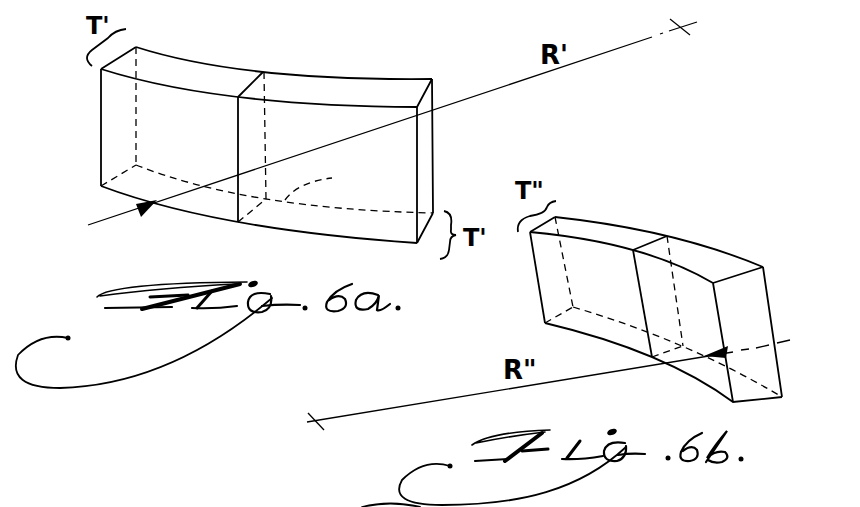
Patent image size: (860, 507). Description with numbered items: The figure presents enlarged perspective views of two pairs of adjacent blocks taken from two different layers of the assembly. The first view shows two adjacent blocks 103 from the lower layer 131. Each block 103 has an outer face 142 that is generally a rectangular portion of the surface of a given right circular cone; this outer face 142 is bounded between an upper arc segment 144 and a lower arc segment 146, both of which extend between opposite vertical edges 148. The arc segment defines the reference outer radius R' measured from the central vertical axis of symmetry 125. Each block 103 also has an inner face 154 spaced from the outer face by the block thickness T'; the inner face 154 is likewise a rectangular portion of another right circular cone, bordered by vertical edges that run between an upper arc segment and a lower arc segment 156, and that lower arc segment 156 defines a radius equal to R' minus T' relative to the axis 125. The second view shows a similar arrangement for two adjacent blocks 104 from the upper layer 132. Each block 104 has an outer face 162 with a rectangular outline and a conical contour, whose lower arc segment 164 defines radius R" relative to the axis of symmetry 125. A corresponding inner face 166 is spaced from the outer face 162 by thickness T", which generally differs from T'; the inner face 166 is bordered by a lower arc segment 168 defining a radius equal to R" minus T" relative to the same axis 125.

In FIG. 6A, the block 103 is at (230, 136).
In FIG. 6A, the lower layer 131 is at (230, 136).
In FIG. 6B, the block 104 is at (662, 278).
In FIG. 6B, the upper layer 132 is at (662, 278).
In FIG. 6A, the central vertical axis of symmetry 125 is at (678, 36).
In FIG. 6B, the central vertical axis of symmetry 125 is at (314, 428).
In FIG. 6A, the outer face 142 is at (201, 138).
In FIG. 6A, the upper arc segment 144 is at (124, 74).
In FIG. 6A, the lower arc segment 146 is at (187, 212).
In FIG. 6A, the vertical edges 148 is at (238, 160).
In FIG. 6A, the inner face 154 is at (337, 145).
In FIG. 6A, the lower arc segment 156 is at (331, 187).
In FIG. 6B, the outer face 162 is at (761, 286).
In FIG. 6B, the lower arc segment 164 is at (712, 393).
In FIG. 6B, the inner face 166 is at (619, 292).
In FIG. 6B, the lower arc segment 168 is at (565, 332).